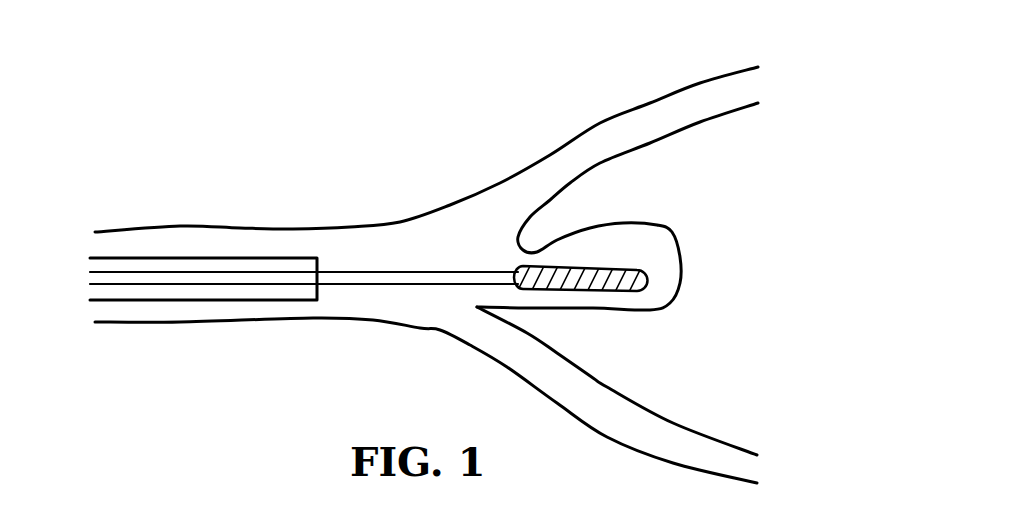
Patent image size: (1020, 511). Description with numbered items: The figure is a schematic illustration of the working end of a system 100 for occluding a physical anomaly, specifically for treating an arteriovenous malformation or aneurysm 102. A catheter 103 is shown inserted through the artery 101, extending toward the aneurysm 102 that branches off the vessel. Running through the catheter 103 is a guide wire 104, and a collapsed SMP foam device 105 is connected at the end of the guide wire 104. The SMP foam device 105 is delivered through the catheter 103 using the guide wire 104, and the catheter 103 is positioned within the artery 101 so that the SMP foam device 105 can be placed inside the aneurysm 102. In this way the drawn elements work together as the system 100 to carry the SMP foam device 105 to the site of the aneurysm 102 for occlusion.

The system for occluding a physical anomaly 100 is at (198, 90).
The artery 101 is at (373, 323).
The aneurysm 102 is at (672, 225).
The catheter 103 is at (250, 255).
The guide wire 104 is at (367, 270).
The SMP foam device 105 is at (643, 290).